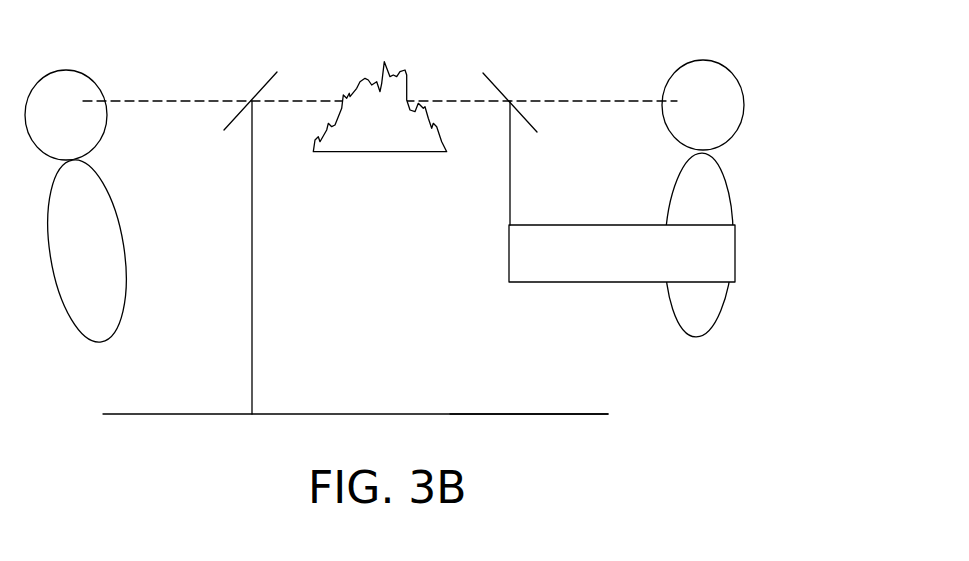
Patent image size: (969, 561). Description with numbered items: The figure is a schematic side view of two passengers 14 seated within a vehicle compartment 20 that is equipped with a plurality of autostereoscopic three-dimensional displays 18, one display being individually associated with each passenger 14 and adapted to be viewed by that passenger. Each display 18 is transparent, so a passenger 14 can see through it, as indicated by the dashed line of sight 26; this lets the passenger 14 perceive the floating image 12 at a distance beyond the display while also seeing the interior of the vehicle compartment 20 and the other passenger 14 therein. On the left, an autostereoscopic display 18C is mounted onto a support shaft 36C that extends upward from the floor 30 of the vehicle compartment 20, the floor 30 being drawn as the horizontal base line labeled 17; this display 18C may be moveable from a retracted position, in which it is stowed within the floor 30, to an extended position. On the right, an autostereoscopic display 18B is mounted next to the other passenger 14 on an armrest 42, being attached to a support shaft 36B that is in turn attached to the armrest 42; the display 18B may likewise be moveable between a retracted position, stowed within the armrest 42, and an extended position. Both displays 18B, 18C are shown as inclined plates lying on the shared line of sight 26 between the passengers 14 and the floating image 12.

The floating image 12 is at (393, 133).
The passenger 14 is at (100, 264).
The base surface 17 is at (358, 414).
The autostereoscopic three-dimensional display 18 is at (386, 73).
The autostereoscopic display 18C is at (262, 89).
The autostereoscopic display 18B is at (492, 82).
The vehicle compartment 20 is at (142, 438).
The see-through line of sight 26 is at (173, 100).
The floor 30 is at (587, 414).
The support shaft 36B is at (510, 178).
The support shaft 36C is at (252, 287).
The armrest 42 is at (634, 267).